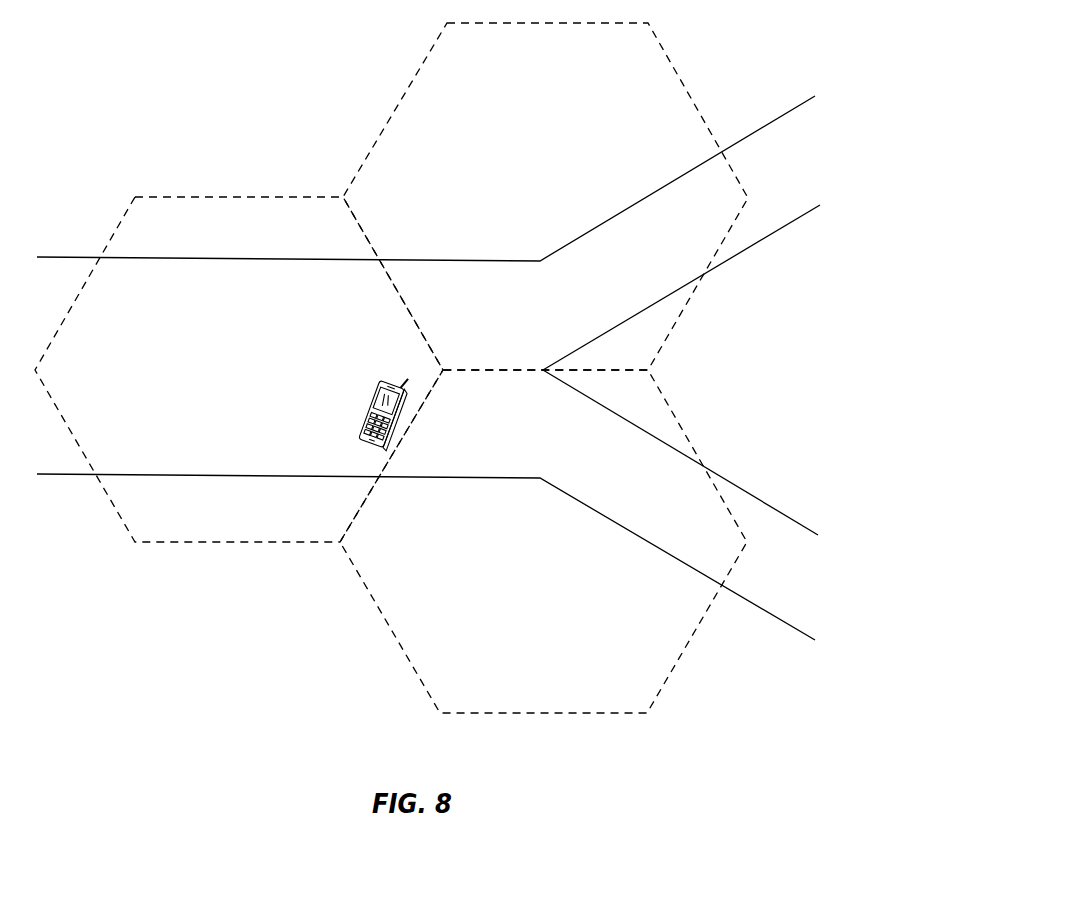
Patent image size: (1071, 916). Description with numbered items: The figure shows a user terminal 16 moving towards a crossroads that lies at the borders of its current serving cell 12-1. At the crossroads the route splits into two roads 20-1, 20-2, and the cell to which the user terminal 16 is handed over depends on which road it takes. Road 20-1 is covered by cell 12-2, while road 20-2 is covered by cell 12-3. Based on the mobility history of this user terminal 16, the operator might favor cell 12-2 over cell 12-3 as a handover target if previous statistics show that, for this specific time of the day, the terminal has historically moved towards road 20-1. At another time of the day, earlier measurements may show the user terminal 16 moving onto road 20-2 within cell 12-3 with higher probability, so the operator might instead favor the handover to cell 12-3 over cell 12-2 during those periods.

The cell 12-1 is at (250, 197).
The cell 12-2 is at (683, 307).
The cell 12-3 is at (680, 423).
The user terminal 16 is at (378, 390).
The road 20-1 is at (752, 248).
The road 20-2 is at (750, 490).